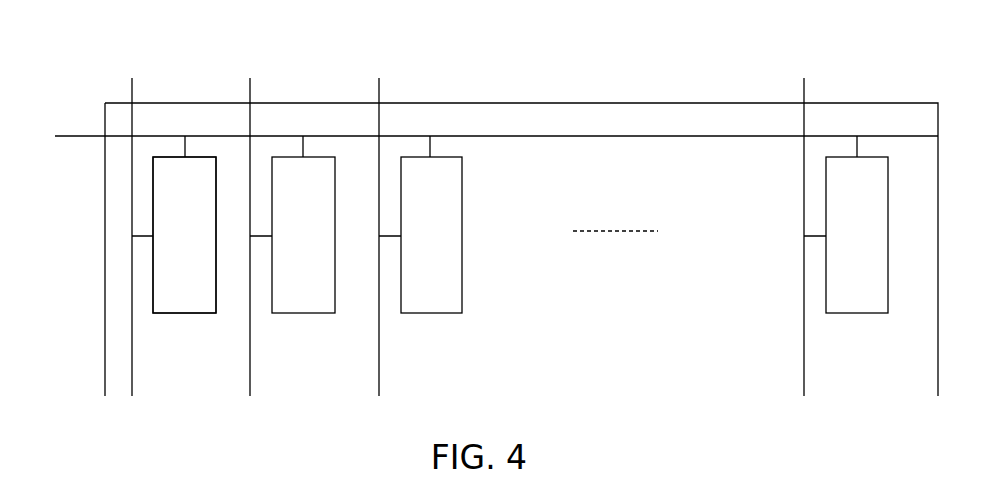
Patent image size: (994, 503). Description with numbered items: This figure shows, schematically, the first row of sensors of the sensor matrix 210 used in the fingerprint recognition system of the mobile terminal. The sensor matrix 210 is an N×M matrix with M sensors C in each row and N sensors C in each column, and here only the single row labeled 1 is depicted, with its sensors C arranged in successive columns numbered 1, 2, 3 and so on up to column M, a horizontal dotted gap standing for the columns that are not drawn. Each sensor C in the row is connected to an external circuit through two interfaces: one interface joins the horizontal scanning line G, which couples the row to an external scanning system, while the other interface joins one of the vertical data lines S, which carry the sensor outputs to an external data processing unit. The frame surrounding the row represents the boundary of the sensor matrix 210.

The sensor matrix 210 is at (513, 32).
The first column (pixel column 1) / first row 1 is at (137, 190).
The second column (pixel column 2) 2 is at (292, 231).
The third column (pixel column 3) 3 is at (420, 231).
The number of columns M is at (846, 232).
The data lines S is at (131, 219).
The scanning lines G is at (484, 136).
The sensors C is at (190, 293).